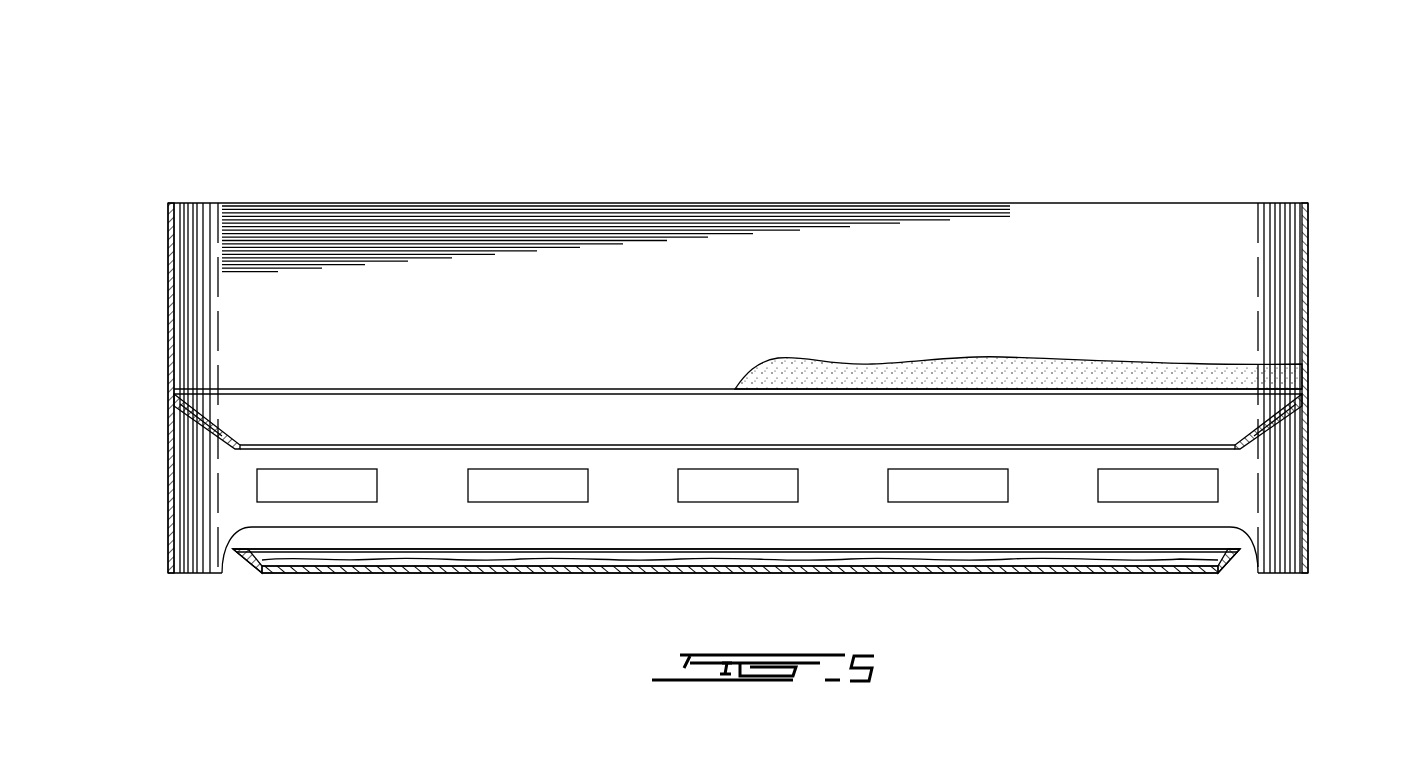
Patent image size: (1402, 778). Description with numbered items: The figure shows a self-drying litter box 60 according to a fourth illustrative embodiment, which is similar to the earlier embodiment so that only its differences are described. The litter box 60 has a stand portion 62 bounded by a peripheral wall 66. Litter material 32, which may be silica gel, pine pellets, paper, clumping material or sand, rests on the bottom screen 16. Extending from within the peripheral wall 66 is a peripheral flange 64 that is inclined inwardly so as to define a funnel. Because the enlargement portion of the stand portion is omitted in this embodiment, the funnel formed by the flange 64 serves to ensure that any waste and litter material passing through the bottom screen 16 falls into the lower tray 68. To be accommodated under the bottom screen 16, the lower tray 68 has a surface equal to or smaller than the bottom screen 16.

The self-drying litter box 60 is at (1260, 124).
The stand portion 62 is at (1322, 442).
The peripheral wall 66 is at (1308, 250).
The bottom screen 16 is at (607, 389).
The peripheral flange 64 is at (1262, 432).
The litter material 32 is at (952, 378).
The lower tray 68 is at (1155, 556).